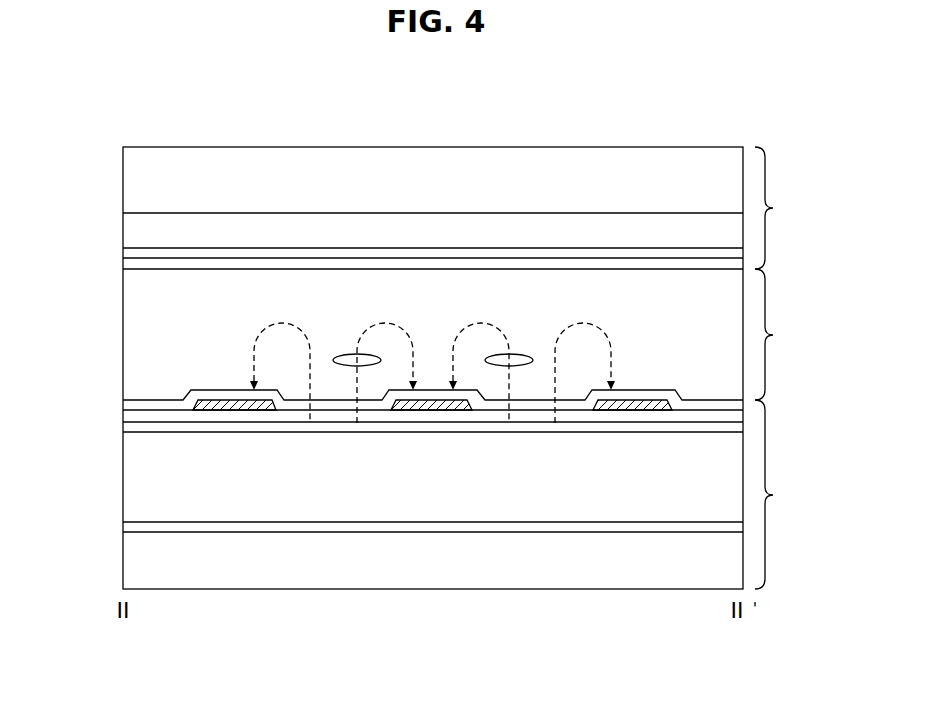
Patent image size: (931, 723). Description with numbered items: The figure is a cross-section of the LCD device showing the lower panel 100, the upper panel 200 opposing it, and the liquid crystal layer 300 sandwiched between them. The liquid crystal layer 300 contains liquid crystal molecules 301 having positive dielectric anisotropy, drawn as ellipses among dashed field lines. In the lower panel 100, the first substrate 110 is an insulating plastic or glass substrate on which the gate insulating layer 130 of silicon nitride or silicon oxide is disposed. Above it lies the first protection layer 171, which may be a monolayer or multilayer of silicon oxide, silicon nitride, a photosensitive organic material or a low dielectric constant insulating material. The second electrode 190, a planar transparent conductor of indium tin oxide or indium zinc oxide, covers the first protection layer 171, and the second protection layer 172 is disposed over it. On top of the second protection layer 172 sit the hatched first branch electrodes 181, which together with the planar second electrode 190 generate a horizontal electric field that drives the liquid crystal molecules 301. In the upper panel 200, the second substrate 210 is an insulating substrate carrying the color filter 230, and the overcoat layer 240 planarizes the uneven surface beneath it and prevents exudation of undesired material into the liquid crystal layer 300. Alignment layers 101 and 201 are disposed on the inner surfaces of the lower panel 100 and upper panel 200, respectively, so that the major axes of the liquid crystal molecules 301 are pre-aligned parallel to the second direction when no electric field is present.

The lower panel 100 is at (794, 494).
The alignment layer 101 is at (157, 408).
The first substrate 110 is at (142, 558).
The gate insulating layer 130 is at (138, 526).
The first protection layer 171 is at (142, 473).
The second protection layer 172 is at (137, 417).
The first branch electrodes 181 is at (222, 405).
The second electrode 190 is at (137, 427).
The upper panel 200 is at (784, 208).
The alignment layer 201 is at (648, 263).
The second substrate 210 is at (588, 172).
The color filter 230 is at (280, 233).
The overcoat layer 240 is at (385, 253).
The liquid crystal layer 300 is at (542, 346).
The liquid crystal molecules 301 is at (517, 358).